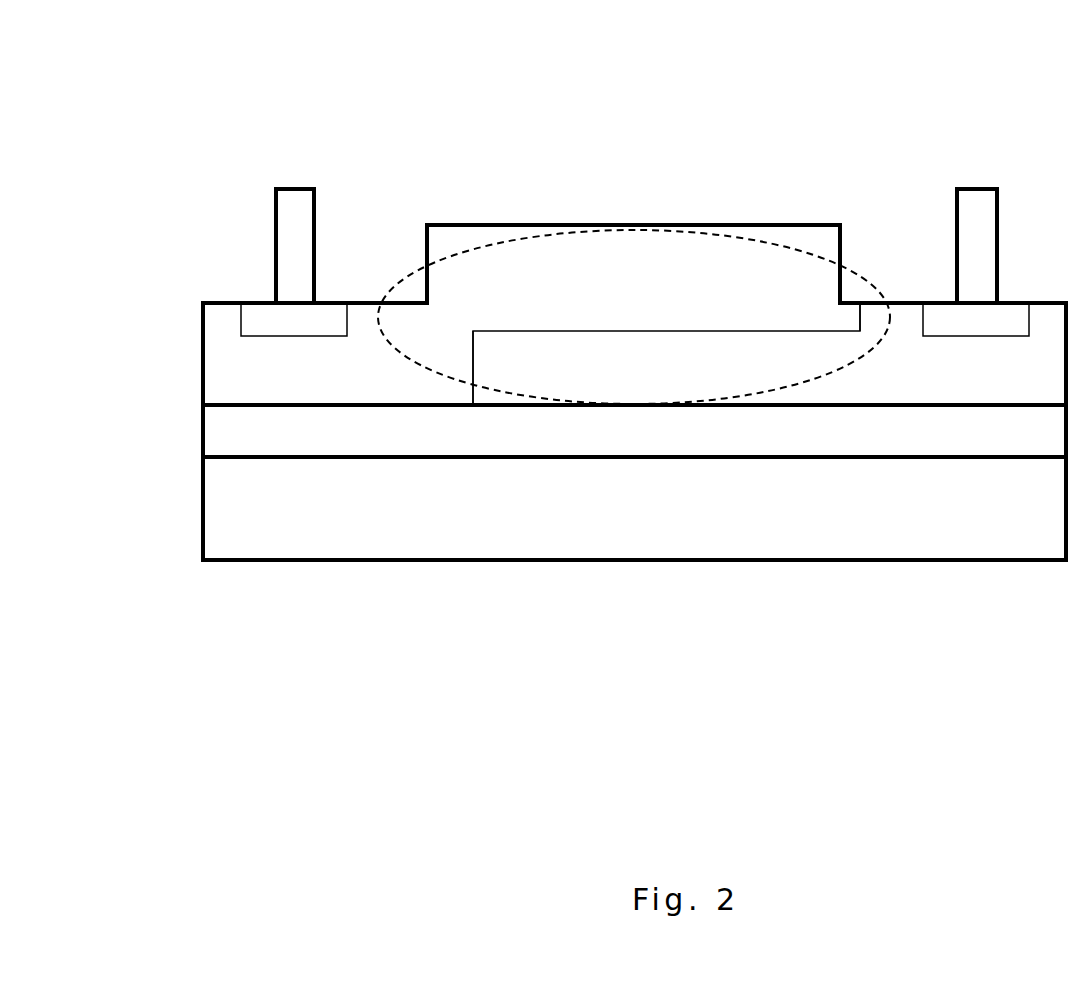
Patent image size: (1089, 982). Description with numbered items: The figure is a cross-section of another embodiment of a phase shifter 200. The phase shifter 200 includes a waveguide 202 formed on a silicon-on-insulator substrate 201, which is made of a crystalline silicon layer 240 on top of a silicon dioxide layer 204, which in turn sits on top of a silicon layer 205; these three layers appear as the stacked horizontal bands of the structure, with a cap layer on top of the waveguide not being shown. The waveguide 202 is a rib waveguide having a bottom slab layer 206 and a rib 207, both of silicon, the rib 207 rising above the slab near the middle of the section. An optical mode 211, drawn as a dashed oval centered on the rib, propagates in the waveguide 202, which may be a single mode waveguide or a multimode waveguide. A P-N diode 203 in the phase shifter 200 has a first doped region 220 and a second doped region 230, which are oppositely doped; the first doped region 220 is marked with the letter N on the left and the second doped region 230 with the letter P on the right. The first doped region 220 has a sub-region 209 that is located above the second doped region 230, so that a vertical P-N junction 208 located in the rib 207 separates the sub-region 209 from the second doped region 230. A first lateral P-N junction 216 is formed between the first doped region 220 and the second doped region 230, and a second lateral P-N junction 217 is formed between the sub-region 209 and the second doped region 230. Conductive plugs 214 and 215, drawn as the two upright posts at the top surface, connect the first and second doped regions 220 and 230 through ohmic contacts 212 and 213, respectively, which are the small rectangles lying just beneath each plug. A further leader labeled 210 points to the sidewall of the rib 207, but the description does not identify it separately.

The phase shifter 200 is at (372, 155).
The silicon-on-insulator (SOI) substrate 201 is at (150, 412).
The waveguide 202 is at (535, 155).
The P-N diode 203 is at (792, 177).
The silicon dioxide layer 204 is at (307, 450).
The silicon layer 205 is at (307, 528).
The bottom slab layer 206 is at (200, 363).
The rib 207 is at (842, 262).
The vertical P-N junction 208 is at (608, 331).
The sub-region 209 is at (630, 280).
The rib sidewall 210 is at (448, 322).
The optical mode 211 is at (797, 383).
The ohmic contact 212 is at (258, 313).
The ohmic contact 213 is at (1008, 322).
The conductive plug 214 is at (297, 215).
The conductive plug 215 is at (973, 225).
The first lateral P-N junction 216 is at (472, 383).
The second lateral P-N junction 217 is at (860, 317).
The first doped region 220 is at (307, 388).
The second doped region 230 is at (1007, 387).
The crystalline silicon layer 240 is at (228, 348).